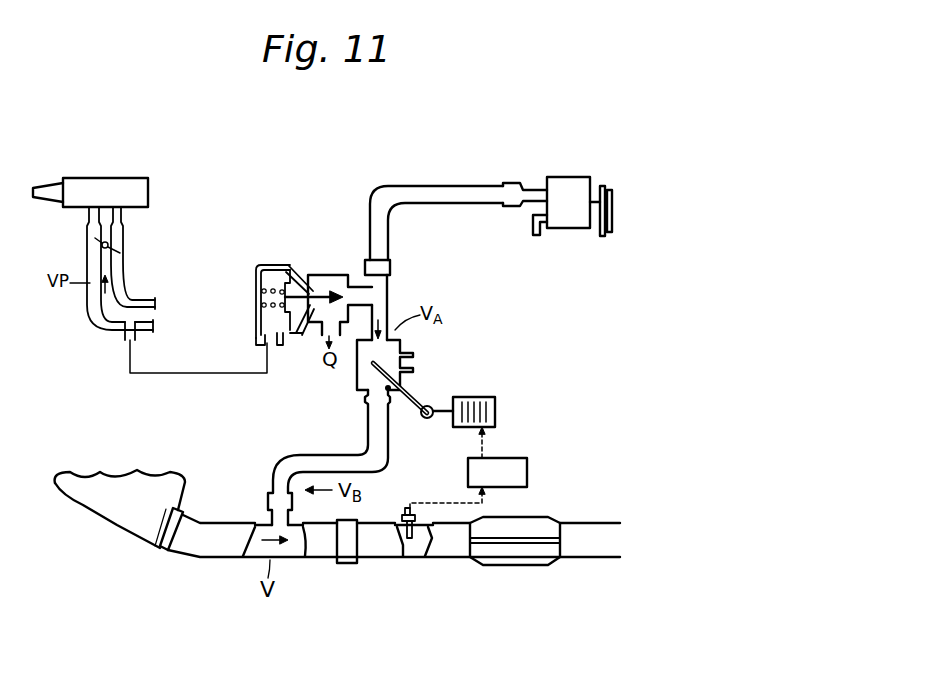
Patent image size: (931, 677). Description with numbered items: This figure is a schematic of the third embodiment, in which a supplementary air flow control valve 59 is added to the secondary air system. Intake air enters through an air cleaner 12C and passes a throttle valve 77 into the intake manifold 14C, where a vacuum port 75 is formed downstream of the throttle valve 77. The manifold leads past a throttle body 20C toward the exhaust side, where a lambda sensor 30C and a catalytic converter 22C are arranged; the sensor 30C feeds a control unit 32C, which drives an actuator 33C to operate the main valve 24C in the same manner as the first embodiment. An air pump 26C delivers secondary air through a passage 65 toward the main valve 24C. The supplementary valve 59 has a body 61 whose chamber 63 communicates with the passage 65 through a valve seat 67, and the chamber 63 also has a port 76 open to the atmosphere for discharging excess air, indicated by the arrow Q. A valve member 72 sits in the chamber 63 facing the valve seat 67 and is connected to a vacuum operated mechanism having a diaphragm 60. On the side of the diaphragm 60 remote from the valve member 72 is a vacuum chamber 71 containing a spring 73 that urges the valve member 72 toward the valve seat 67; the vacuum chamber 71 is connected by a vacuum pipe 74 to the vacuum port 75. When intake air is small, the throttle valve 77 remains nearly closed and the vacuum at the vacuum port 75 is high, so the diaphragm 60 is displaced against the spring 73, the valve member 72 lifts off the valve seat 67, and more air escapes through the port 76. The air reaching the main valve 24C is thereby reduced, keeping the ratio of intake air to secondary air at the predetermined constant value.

The air cleaner 12C is at (148, 188).
The intake manifold 14C is at (151, 300).
The throttle valve 77 is at (120, 247).
The vacuum port 75 is at (118, 334).
The vacuum pipe 74 is at (190, 374).
The spring 73 is at (268, 268).
The vacuum chamber 71 is at (265, 315).
The diaphragm 60 is at (278, 347).
The port 76 is at (299, 340).
The supplementary air flow control valve 59 is at (304, 243).
The chamber 63 is at (327, 277).
The body 61 is at (362, 276).
The passage 65 is at (387, 280).
The valve seat 67 is at (390, 317).
The main valve 24C is at (497, 342).
The valve member 72 is at (352, 348).
The air pump 26C is at (573, 187).
The actuator 33C is at (495, 410).
The control unit 32C is at (527, 472).
The throttle body 20C is at (325, 556).
The lambda sensor 30C is at (437, 525).
The catalytic converter 22C is at (536, 568).